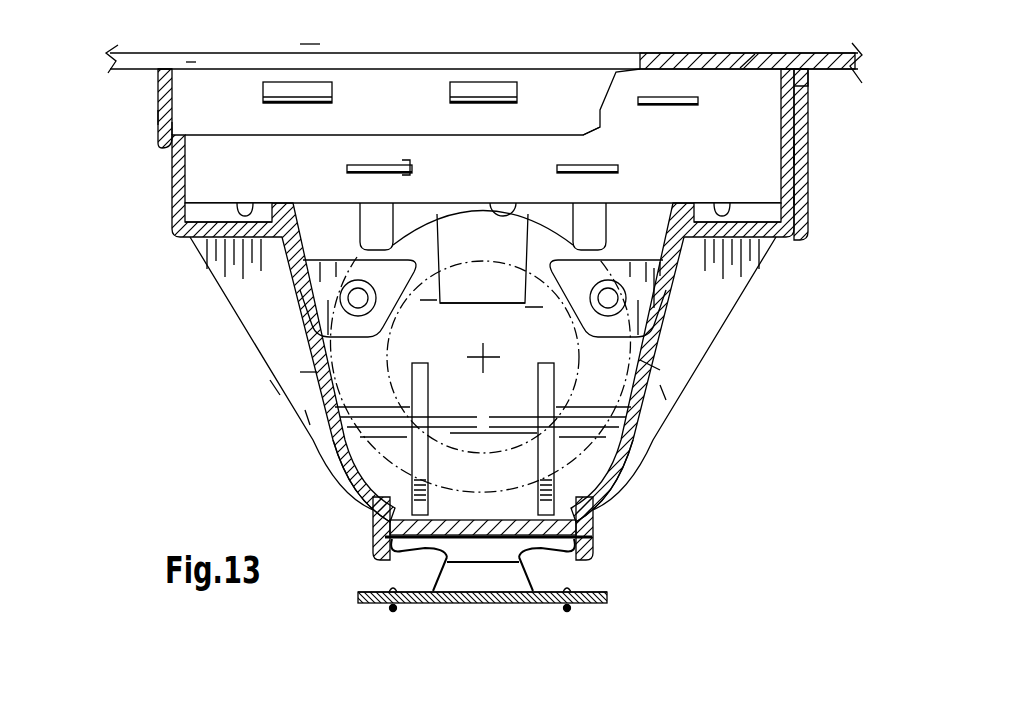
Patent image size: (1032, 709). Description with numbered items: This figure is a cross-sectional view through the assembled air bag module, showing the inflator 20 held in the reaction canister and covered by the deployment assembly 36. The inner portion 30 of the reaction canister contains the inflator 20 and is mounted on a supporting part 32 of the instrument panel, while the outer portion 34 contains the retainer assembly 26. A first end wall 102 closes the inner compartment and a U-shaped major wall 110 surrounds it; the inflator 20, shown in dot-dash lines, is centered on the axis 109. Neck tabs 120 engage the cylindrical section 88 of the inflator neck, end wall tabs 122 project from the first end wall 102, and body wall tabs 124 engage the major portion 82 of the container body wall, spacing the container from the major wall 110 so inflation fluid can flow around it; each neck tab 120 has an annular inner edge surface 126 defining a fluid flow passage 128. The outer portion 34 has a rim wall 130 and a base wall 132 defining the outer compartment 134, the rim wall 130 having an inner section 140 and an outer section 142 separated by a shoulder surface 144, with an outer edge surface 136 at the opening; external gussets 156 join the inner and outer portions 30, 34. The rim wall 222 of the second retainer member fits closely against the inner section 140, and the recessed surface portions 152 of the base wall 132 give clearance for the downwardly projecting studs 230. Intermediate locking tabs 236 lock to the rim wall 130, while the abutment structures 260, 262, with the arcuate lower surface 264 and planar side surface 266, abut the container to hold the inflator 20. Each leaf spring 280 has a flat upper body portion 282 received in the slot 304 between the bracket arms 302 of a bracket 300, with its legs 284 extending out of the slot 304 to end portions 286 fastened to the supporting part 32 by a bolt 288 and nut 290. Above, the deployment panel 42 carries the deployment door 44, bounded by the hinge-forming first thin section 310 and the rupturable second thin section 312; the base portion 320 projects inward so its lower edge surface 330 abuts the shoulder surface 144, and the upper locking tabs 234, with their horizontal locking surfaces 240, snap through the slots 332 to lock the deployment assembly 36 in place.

The inflator 20 is at (354, 252).
The retainer assembly 26 is at (198, 160).
The inner portion of the reaction canister 30 is at (265, 395).
The supporting part of the instrument panel 32 is at (358, 600).
The outer portion of the reaction canister 34 is at (145, 118).
The deployment assembly 36 is at (309, 30).
The deployment panel 42 is at (364, 52).
The deployment door 44 is at (717, 62).
The major portion of the body wall 82 is at (645, 412).
The cylindrical section of the neck portion 88 is at (660, 370).
The first end wall 102 is at (330, 357).
The axis 109 is at (497, 350).
The major wall 110 is at (317, 372).
The neck tabs 120 is at (333, 330).
The end wall tabs 122 is at (540, 414).
The body wall tabs 124 is at (353, 448).
The annular inner edge surface 126 is at (335, 285).
The fluid flow passage 128 is at (318, 306).
The rim wall 130 is at (164, 96).
The base wall 132 is at (232, 255).
The outer compartment 134 is at (606, 158).
The outer edge surface 136 is at (156, 97).
The inner section of the rim wall 140 is at (790, 178).
The outer section of the rim wall 142 is at (812, 80).
The shoulder surface 144 is at (181, 130).
The recessed surface portions 152 is at (200, 200).
The external gussets 156 is at (308, 422).
The rim wall of the second retainer member 222 is at (803, 198).
The cylindrical studs 230 is at (246, 212).
The upper locking tabs 234 is at (505, 97).
The intermediate locking tabs 236 is at (402, 168).
The horizontal locking surfaces 240 is at (482, 107).
The first abutment structure 260 is at (398, 207).
The second abutment structure 262 is at (465, 305).
The arcuate lower surface 264 is at (514, 226).
The planar side surface 266 is at (480, 277).
The leaf spring 280 is at (600, 537).
The upper body portion 282 is at (585, 510).
The legs 284 is at (453, 577).
The end portion 286 is at (358, 594).
The bolt 288 is at (397, 611).
The nut 290 is at (391, 606).
The bracket 300 is at (362, 520).
The bracket arms 302 is at (420, 558).
The slot 304 is at (489, 566).
The first thin section 310 is at (190, 62).
The second thin section 312 is at (750, 60).
The base portion 320 is at (522, 123).
The lower edge surface 330 is at (318, 137).
The slots 332 is at (452, 68).